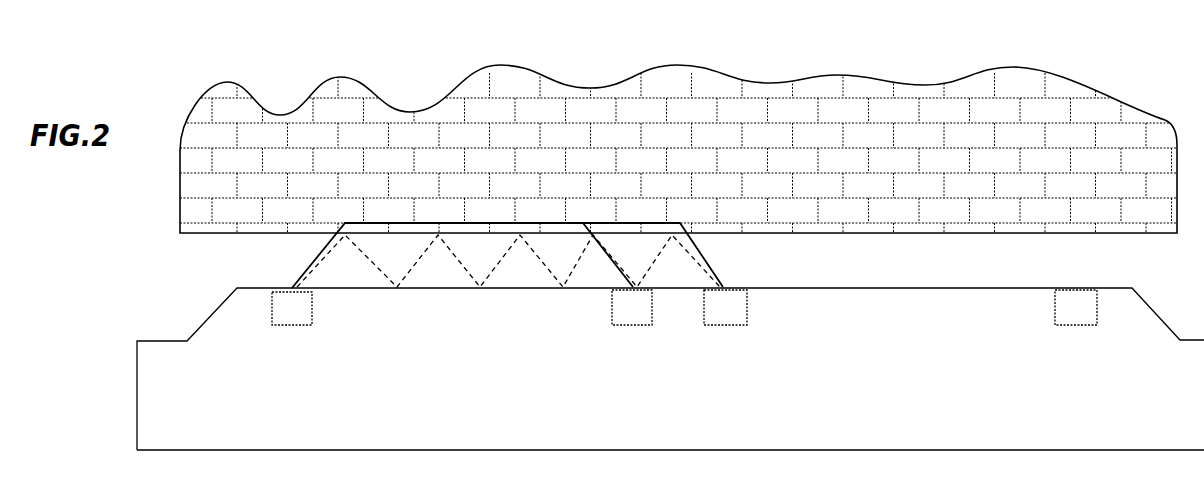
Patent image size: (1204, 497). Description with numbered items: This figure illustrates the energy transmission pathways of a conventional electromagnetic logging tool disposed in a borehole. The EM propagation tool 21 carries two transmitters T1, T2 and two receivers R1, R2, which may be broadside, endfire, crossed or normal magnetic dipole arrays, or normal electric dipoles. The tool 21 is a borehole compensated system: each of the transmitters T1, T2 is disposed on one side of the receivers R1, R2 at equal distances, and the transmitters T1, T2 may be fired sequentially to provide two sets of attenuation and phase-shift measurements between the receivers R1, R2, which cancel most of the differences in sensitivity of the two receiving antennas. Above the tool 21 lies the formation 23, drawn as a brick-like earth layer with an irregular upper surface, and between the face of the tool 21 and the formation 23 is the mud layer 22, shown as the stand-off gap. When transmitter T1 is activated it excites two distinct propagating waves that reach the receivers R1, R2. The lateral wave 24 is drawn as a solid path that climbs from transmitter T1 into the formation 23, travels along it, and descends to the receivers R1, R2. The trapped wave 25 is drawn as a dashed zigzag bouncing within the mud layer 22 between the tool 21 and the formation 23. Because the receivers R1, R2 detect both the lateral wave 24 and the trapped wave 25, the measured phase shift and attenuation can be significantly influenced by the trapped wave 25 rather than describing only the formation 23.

The EM propagation tool 21 is at (690, 441).
The mud layer 22 is at (800, 272).
The formation 23 is at (723, 170).
The lateral wave 24 is at (583, 223).
The trapped wave 25 is at (327, 258).
The transmitter T1 is at (291, 328).
The transmitter T2 is at (1077, 326).
The receiver R1 is at (674, 327).
The receiver R2 is at (725, 307).